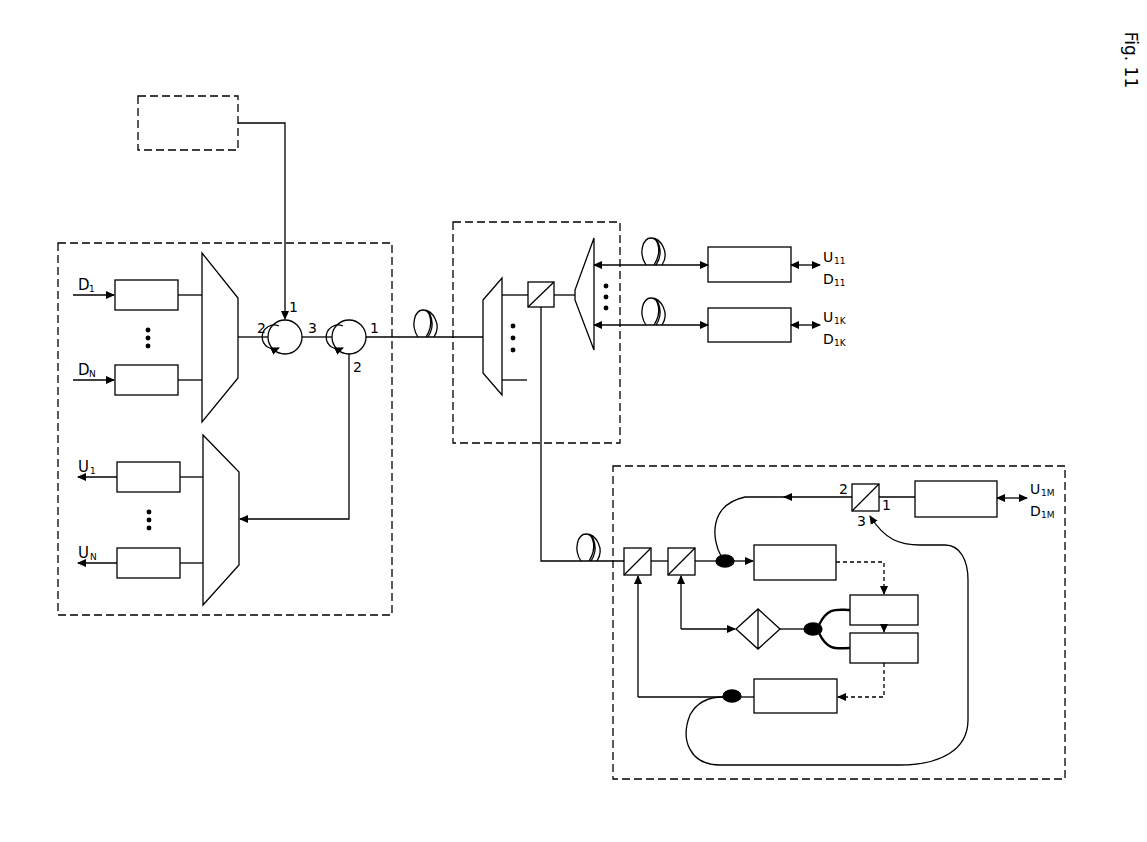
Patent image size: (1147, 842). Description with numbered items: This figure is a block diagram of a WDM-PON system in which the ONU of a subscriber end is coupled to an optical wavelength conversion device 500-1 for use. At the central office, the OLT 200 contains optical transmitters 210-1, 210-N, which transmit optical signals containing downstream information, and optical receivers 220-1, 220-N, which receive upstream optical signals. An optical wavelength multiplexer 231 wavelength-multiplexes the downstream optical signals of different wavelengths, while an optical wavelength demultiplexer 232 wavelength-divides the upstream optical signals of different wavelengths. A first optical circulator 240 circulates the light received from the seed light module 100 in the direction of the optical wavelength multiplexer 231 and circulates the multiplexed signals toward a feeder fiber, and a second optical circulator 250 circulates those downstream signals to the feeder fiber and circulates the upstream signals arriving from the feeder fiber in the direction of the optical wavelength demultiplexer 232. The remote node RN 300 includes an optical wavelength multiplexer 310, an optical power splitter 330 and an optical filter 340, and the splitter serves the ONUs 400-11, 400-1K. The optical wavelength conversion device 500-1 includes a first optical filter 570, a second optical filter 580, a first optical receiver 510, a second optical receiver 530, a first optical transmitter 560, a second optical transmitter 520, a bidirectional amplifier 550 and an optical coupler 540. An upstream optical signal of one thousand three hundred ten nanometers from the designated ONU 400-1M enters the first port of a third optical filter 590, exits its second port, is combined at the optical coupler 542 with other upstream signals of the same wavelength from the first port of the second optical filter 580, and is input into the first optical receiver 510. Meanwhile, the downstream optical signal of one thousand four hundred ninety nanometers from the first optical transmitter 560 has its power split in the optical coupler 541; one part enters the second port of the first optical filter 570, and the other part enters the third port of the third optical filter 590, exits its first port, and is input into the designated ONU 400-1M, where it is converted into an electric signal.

The seed light module 100 is at (210, 96).
The OLT 200 is at (98, 243).
The optical transmitter 210-1 is at (134, 280).
The optical transmitter 210-N is at (134, 365).
The optical receiver 220-1 is at (134, 462).
The optical receiver 220-N is at (125, 550).
The optical wavelength multiplexer 231 is at (228, 286).
The optical wavelength demultiplexer 232 is at (228, 466).
The first optical circulator 240 is at (285, 355).
The second optical circulator 250 is at (350, 320).
The RN 300 is at (598, 222).
The optical wavelength multiplexer 310 is at (492, 288).
The optical power splitter 330 is at (584, 272).
The optical filter 340 is at (540, 282).
The ONU 400-11 is at (772, 247).
The ONU 400-1K is at (768, 342).
The ONU 400-1M is at (956, 481).
The optical wavelength conversion device 500-1 is at (786, 466).
The first optical receiver 510 is at (824, 545).
The second optical transmitter 520 is at (906, 595).
The second optical receiver 530 is at (900, 663).
The optical coupler 540 is at (810, 636).
The optical coupler 541 is at (733, 704).
The optical coupler 542 is at (728, 555).
The bidirectional amplifier 550 is at (748, 646).
The first optical transmitter 560 is at (814, 713).
The first optical filter 570 is at (642, 537).
The second optical filter 580 is at (686, 537).
The third optical filter 590 is at (866, 484).